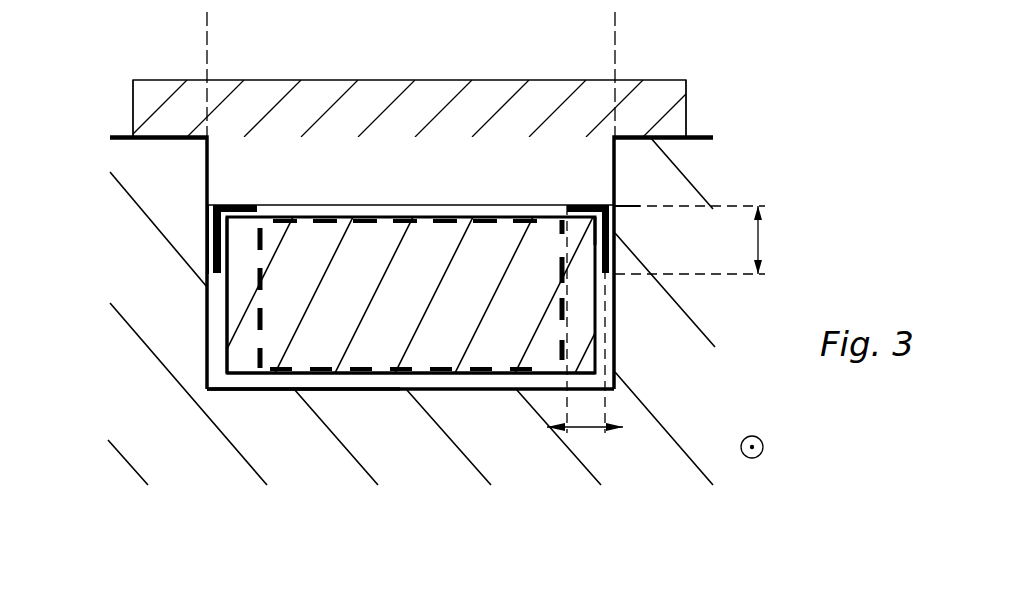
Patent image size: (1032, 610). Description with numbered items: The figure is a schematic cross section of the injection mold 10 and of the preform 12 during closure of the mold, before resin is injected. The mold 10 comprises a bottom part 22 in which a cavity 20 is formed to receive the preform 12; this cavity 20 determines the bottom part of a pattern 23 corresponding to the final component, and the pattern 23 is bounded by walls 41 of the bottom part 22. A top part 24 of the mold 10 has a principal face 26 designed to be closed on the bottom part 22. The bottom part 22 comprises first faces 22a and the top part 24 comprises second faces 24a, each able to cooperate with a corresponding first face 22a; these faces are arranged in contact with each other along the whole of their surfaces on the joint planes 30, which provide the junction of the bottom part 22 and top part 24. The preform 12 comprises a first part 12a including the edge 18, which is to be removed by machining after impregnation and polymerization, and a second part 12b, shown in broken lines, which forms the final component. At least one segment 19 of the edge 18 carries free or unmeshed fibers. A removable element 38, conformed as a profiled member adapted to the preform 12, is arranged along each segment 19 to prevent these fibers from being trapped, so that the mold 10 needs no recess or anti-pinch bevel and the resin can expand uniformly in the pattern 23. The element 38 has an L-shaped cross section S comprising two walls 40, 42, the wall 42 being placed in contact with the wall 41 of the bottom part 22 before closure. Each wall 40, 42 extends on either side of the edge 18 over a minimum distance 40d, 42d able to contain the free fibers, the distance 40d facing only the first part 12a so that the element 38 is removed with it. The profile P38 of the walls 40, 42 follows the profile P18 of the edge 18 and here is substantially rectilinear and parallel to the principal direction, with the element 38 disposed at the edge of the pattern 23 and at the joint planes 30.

The injection mold 10 is at (775, 410).
The preform 12 is at (434, 295).
The first part of the preform 12a is at (252, 362).
The second part of the preform 12b is at (262, 318).
The edge of the preform 18 is at (238, 352).
The segment of the edge 19 is at (235, 220).
The cavity 20 is at (503, 389).
The bottom part of the mold 22 is at (430, 520).
The first faces 22a is at (207, 173).
The pattern 23 is at (392, 389).
The top part of the mold 24 is at (478, 105).
The second faces 24a is at (207, 158).
The principal face 26 is at (536, 208).
The joint planes 30 is at (207, 20).
The removable element 38 is at (197, 236).
The wall of the removable element 40 is at (233, 206).
The minimum distance 40d is at (585, 428).
The wall of the bottom part 41 is at (245, 345).
The wall of the removable element 42 is at (228, 265).
The minimum distance 42d is at (711, 240).
The cross section S is at (206, 209).
The profile of the walls of the removable element P38 is at (615, 206).
The profile of the edge P18 is at (617, 216).